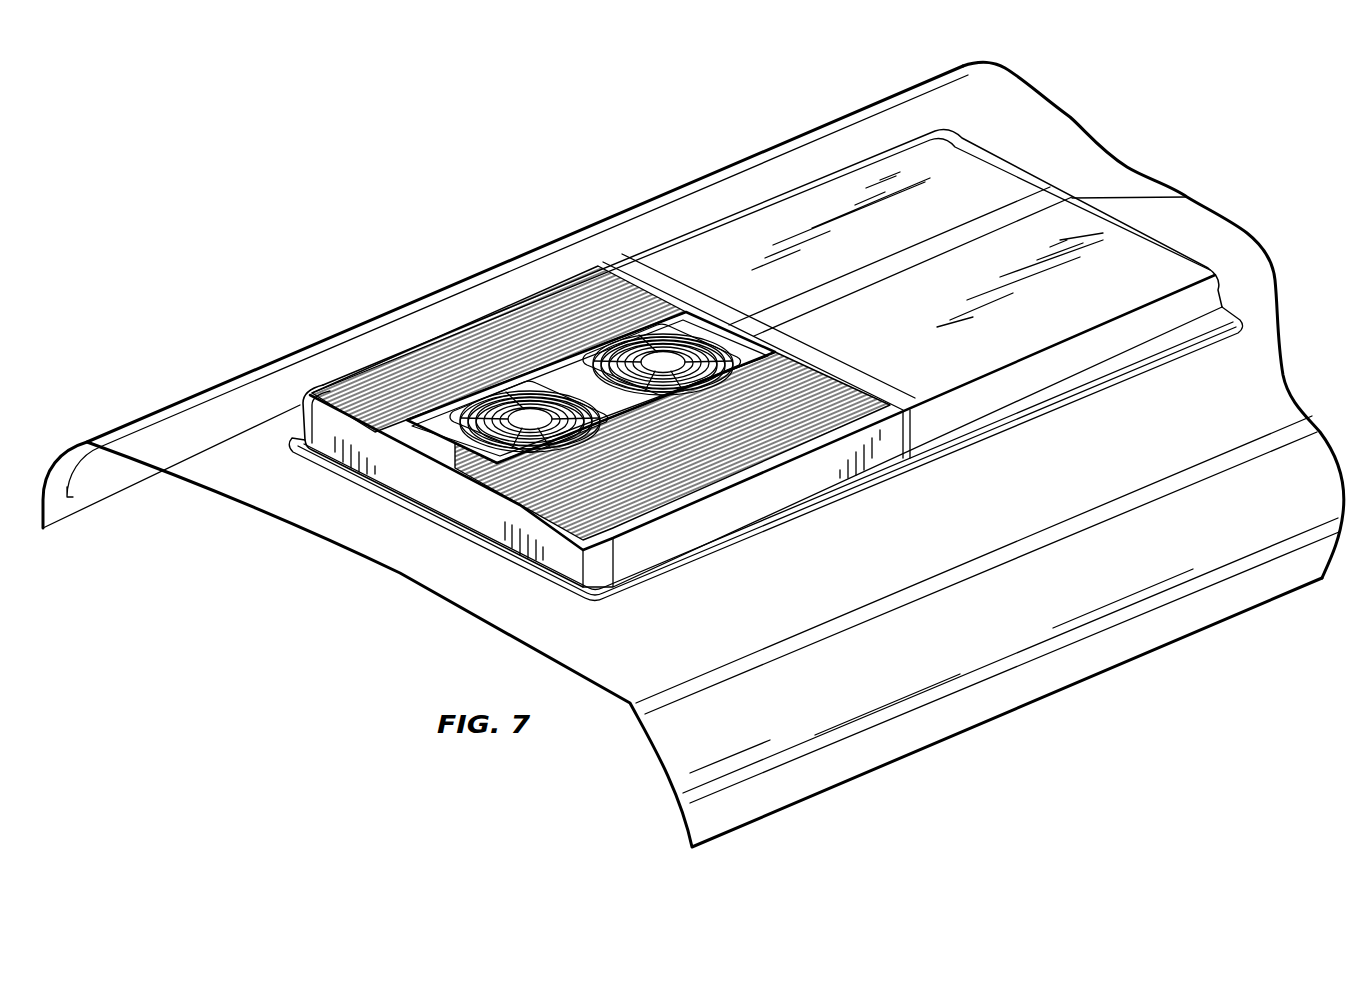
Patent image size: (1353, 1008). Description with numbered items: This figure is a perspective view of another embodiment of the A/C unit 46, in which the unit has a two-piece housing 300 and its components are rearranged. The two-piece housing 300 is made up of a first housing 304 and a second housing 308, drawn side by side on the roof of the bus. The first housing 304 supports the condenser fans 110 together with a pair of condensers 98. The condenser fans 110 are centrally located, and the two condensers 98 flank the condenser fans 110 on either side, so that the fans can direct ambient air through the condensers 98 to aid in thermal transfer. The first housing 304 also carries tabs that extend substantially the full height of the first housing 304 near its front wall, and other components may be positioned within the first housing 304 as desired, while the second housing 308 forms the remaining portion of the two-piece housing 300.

The A/C unit 46 is at (600, 118).
The two-piece housing 300 is at (760, 237).
The second housing 308 is at (988, 225).
The condenser 98 is at (467, 350).
The condenser fans 110 is at (650, 402).
The first housing 304 is at (393, 467).